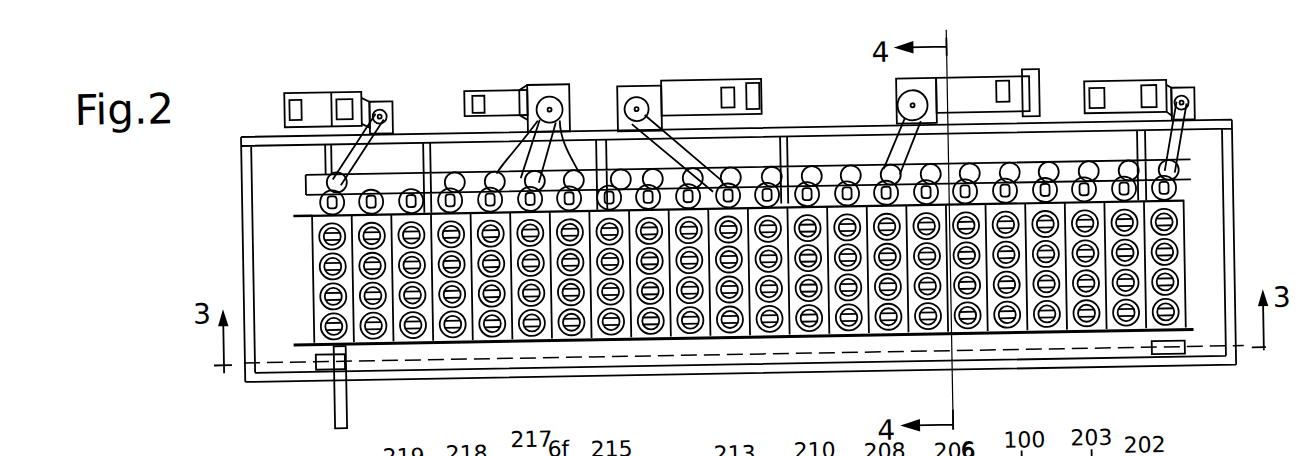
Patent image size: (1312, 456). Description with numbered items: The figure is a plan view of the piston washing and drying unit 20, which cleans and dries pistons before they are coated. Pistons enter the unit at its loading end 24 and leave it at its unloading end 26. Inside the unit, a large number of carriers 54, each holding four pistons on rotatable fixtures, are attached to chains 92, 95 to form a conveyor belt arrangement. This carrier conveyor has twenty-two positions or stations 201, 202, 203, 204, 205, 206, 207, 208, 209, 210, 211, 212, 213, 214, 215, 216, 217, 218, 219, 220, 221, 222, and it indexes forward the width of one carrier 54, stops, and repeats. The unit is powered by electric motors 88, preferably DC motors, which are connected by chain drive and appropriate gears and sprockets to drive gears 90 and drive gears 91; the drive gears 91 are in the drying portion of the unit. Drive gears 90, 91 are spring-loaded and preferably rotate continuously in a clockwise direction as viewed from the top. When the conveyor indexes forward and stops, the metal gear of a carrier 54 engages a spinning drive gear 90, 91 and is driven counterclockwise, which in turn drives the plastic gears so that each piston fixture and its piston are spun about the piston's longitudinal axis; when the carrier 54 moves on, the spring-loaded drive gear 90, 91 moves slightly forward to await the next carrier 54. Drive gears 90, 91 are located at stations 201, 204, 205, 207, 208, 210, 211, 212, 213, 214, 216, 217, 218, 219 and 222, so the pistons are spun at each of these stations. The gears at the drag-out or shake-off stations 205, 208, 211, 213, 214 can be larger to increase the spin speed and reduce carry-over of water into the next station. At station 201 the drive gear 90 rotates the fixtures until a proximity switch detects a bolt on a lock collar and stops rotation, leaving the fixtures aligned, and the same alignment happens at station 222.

The piston washing and drying unit 20 is at (220, 108).
The loading end 24 is at (1183, 256).
The unloading end 26 is at (312, 251).
The carrier 54 is at (342, 385).
The electric motor 88 is at (297, 96).
The drive gear 90 is at (315, 212).
The drive gear 91 is at (522, 188).
The chain 92 is at (312, 342).
The chain 95 is at (313, 213).
The station 201 is at (1175, 347).
The station 202 is at (1122, 346).
The station 203 is at (1085, 346).
The station 204 is at (1040, 346).
The station 205 is at (1004, 346).
The station 206 is at (963, 345).
The station 207 is at (920, 346).
The station 208 is at (879, 345).
The station 209 is at (840, 346).
The station 210 is at (803, 345).
The station 211 is at (760, 346).
The station 212 is at (723, 345).
The station 213 is at (684, 345).
The station 214 is at (645, 344).
The station 215 is at (604, 344).
The station 216 is at (563, 343).
The station 217 is at (533, 343).
The station 218 is at (486, 343).
The station 219 is at (441, 343).
The station 220 is at (396, 346).
The station 221 is at (373, 345).
The station 222 is at (330, 342).